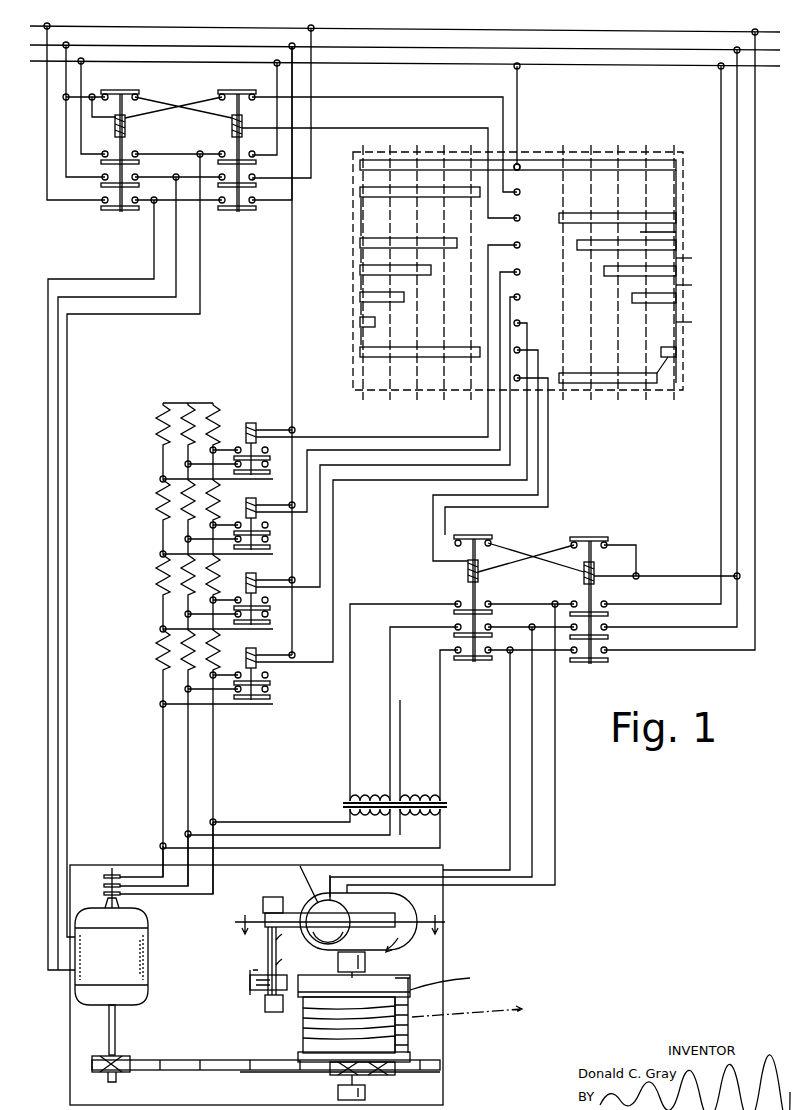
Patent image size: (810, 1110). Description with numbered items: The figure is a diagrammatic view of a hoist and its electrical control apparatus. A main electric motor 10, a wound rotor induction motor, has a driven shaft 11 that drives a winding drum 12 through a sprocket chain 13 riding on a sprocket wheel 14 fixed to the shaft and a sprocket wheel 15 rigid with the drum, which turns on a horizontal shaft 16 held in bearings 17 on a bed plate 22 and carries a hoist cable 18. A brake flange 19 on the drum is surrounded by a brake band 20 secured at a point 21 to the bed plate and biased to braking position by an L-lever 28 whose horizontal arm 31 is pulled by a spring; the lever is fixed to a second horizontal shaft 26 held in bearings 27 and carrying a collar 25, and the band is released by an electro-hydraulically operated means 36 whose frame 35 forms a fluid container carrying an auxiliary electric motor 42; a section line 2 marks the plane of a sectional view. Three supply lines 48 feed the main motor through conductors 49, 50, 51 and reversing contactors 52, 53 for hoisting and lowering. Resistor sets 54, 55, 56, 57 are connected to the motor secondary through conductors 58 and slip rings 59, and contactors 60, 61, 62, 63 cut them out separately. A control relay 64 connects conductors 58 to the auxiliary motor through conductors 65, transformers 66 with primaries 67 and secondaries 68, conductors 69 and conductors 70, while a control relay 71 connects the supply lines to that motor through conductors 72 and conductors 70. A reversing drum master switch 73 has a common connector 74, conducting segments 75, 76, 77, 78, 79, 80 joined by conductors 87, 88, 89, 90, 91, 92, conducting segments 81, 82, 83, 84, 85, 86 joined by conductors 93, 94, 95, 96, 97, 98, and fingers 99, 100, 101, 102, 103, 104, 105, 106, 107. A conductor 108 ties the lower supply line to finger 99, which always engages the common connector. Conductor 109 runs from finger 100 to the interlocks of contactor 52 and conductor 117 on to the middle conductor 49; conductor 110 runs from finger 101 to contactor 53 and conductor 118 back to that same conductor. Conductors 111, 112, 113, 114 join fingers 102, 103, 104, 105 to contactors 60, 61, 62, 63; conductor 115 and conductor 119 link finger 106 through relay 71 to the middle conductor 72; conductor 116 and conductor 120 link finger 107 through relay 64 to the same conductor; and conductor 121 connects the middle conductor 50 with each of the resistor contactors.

The section line 2 is at (338, 925).
The main electric motor 10 is at (148, 942).
The driven shaft 11 is at (116, 1036).
The winding drum 12 is at (302, 1033).
The sprocket chain 13 is at (228, 1058).
The sprocket wheel 14 is at (130, 1058).
The sprocket wheel 15 is at (310, 1073).
The horizontal shaft 16 is at (395, 1082).
The bearings 17 is at (339, 1093).
The hoist cable 18 is at (472, 998).
The brake flange 19 is at (400, 975).
The brake band 20 is at (449, 977).
The brake band securing point 21 is at (248, 983).
The bed plate 22 is at (443, 1094).
The collar 25 is at (288, 957).
The second horizontal shaft 26 is at (268, 955).
The bearings 27 is at (252, 1018).
The L-lever 28 is at (370, 912).
The horizontal arm 31 is at (288, 937).
The frame 35 is at (396, 898).
The electro-hydraulically operated means 36 is at (404, 949).
The auxiliary electric motor 42 is at (312, 906).
The supply lines 48 is at (493, 64).
The conductors 49 is at (93, 116).
The conductors 50 is at (294, 86).
The conductors 51 is at (52, 428).
The reversing contactor 52 is at (125, 124).
The reversing contactor 53 is at (230, 126).
The set of resistors 54 is at (183, 435).
The set of resistors 55 is at (183, 510).
The set of resistors 56 is at (183, 582).
The set of resistors 57 is at (183, 655).
The conductors 58 is at (195, 757).
The slip rings 59 is at (104, 893).
The contactor 60 is at (246, 424).
The contactor 61 is at (246, 499).
The contactor 62 is at (246, 574).
The contactor 63 is at (246, 649).
The control relay 64 is at (468, 575).
The conductors 65 is at (318, 726).
The transformers 66 is at (454, 797).
The primaries 67 is at (430, 828).
The secondaries 68 is at (426, 788).
The conductors 69 is at (448, 722).
The conductors 70 is at (528, 824).
The control relay 71 is at (584, 576).
The conductors 72 is at (755, 483).
The drum master switch 73 is at (683, 160).
The common connector 74 is at (535, 152).
The conducting segment 75 is at (360, 194).
The conducting segment 76 is at (360, 245).
The conducting segment 77 is at (360, 272).
The conducting segment 78 is at (360, 299).
The conducting segment 79 is at (360, 326).
The conducting segment 80 is at (360, 355).
The conducting segment 81 is at (660, 222).
The conducting segment 82 is at (595, 244).
The conducting segment 83 is at (612, 268).
The conducting segment 84 is at (645, 303).
The conducting segment 85 is at (660, 350).
The conducting segment 86 is at (657, 378).
The conductor 87 is at (518, 173).
The conductor 88 is at (371, 217).
The conductor 89 is at (371, 258).
The conductor 90 is at (371, 285).
The conductor 91 is at (359, 314).
The conductor 92 is at (371, 337).
The conductor 93 is at (674, 188).
The conductor 94 is at (648, 233).
The conductor 95 is at (692, 259).
The conductor 96 is at (692, 287).
The conductor 97 is at (692, 325).
The conductor 98 is at (662, 367).
The finger 99 is at (519, 170).
The finger 100 is at (520, 194).
The finger 101 is at (520, 220).
The finger 102 is at (520, 247).
The finger 103 is at (520, 274).
The finger 104 is at (520, 299).
The finger 105 is at (520, 322).
The finger 106 is at (521, 348).
The finger 107 is at (520, 376).
The conductor 108 is at (519, 100).
The conductor 109 is at (418, 96).
The conductor 110 is at (392, 126).
The conductor 111 is at (332, 437).
The conductor 112 is at (408, 450).
The conductor 113 is at (346, 465).
The conductor 114 is at (390, 480).
The conductor 115 is at (550, 494).
The conductor 116 is at (432, 526).
The conductor 117 is at (117, 119).
The conductor 118 is at (118, 140).
The conductor 119 is at (660, 576).
The conductor 120 is at (626, 545).
The conductor 121 is at (290, 340).